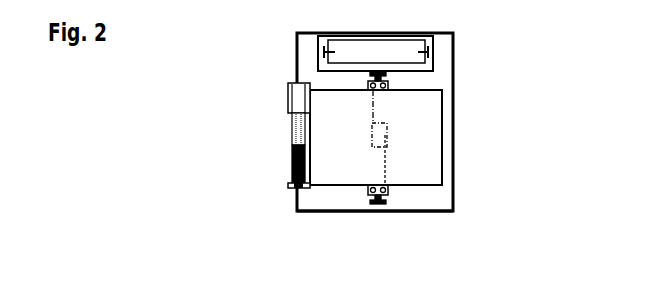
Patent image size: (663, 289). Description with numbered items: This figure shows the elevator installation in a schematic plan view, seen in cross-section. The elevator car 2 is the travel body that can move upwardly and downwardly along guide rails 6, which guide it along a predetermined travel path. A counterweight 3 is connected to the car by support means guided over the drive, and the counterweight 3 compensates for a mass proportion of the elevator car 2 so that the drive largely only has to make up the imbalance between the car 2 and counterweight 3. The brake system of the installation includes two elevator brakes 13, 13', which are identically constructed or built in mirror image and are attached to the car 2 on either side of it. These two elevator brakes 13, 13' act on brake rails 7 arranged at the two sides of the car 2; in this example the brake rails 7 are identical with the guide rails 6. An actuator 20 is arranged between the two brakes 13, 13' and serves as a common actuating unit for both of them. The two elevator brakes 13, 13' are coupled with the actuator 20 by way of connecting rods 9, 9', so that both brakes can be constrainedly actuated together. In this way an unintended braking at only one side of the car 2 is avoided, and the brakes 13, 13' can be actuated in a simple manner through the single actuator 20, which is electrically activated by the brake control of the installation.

The elevator car 2 is at (334, 168).
The counterweight 3 is at (381, 62).
The guide rails 6 is at (436, 72).
The brake rails 7 is at (392, 202).
The connecting rod 9 is at (475, 164).
The connecting rod 9' is at (472, 106).
The elevator brake 13 is at (289, 206).
The elevator brake 13' is at (287, 65).
The actuator 20 is at (387, 127).